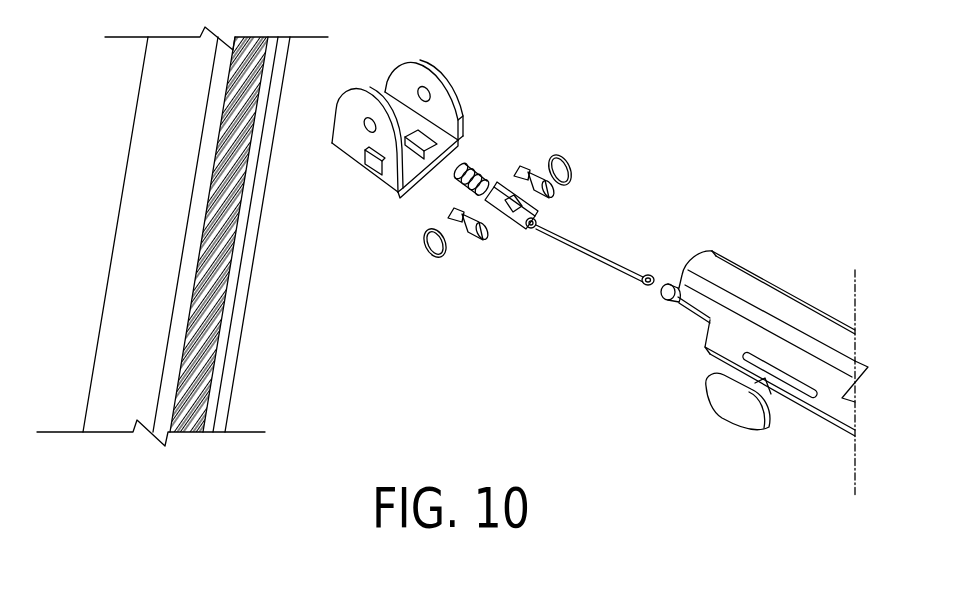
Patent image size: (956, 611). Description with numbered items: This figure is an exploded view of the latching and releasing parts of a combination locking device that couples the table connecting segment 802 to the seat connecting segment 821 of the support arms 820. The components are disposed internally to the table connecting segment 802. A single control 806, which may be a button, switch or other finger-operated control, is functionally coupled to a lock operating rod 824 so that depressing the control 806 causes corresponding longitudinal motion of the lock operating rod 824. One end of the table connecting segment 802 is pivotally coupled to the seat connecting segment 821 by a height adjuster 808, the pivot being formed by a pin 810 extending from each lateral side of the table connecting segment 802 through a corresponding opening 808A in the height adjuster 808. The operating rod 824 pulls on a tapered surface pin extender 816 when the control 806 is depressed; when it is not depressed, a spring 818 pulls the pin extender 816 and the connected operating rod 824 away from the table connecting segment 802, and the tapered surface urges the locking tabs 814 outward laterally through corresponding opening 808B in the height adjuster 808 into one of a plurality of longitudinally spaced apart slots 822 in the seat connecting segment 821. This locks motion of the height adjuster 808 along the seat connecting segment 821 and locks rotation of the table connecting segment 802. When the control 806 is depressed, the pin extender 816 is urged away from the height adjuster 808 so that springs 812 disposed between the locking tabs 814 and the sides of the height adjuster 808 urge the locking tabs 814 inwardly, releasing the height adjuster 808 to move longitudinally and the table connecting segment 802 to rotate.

The table connecting segment 802 is at (725, 357).
The control 806 is at (718, 396).
The height adjuster 808 is at (414, 129).
The opening 808A is at (370, 97).
The opening 808B is at (364, 160).
The pin 810 is at (661, 300).
The spring 812 is at (571, 170).
The locking tab 814 is at (556, 190).
The pin extender 816 is at (498, 188).
The spring 818 is at (460, 181).
The support arm 820 is at (188, 236).
The seat connecting segment 821 is at (143, 128).
The slot 822 is at (218, 300).
The lock operating rod 824 is at (603, 262).